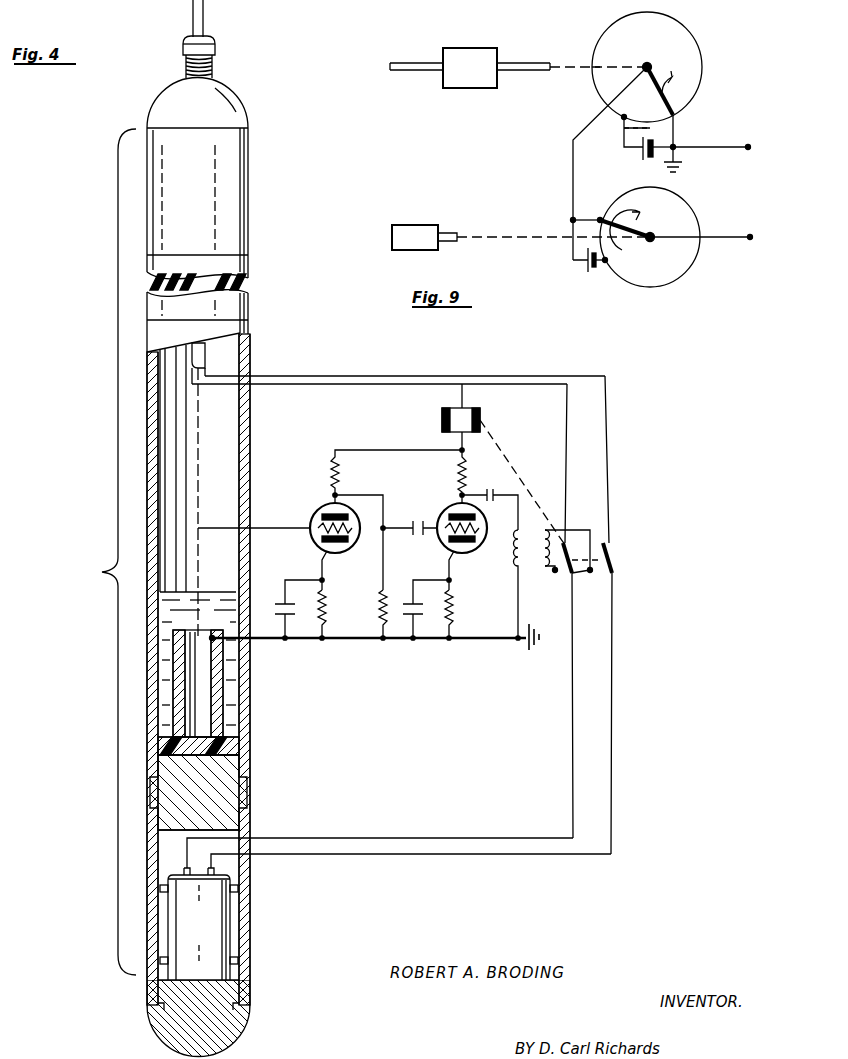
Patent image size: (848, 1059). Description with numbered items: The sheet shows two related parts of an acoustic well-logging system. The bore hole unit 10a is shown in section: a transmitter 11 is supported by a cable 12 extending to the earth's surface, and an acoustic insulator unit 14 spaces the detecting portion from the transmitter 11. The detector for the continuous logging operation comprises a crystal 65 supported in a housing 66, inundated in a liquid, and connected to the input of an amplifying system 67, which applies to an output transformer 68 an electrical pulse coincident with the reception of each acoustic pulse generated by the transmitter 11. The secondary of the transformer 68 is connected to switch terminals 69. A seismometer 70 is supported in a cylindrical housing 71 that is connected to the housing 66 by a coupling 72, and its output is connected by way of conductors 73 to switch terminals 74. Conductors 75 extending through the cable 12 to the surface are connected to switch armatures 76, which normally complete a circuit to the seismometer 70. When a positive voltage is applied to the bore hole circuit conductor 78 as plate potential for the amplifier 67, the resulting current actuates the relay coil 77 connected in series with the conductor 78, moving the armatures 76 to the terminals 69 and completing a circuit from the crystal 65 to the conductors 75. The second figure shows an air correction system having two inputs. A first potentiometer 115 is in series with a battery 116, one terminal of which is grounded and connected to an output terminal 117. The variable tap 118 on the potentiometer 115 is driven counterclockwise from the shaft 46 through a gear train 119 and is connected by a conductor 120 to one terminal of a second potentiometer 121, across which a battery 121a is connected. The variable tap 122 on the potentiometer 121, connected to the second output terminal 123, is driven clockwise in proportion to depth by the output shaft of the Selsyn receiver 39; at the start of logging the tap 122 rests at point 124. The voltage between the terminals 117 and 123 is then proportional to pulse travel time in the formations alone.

In FIG. 4, the bore hole unit 10a is at (97, 552).
In FIG. 4, the transmitter 11 is at (200, 198).
In FIG. 4, the cable 12 is at (206, 26).
In FIG. 4, the acoustic insulator unit 14 is at (249, 262).
In FIG. 4, the crystal 65 is at (205, 680).
In FIG. 4, the housing 66 is at (250, 713).
In FIG. 4, the amplifying system 67 is at (507, 648).
In FIG. 4, the output transformer 68 is at (513, 555).
In FIG. 4, the switch terminals 69 is at (556, 574).
In FIG. 4, the seismometer 70 is at (210, 935).
In FIG. 4, the cylindrical housing 71 is at (250, 914).
In FIG. 4, the coupling 72 is at (208, 803).
In FIG. 4, the conductors 73 is at (468, 853).
In FIG. 4, the switch terminals 74 is at (612, 576).
In FIG. 4, the conductors 75 is at (607, 412).
In FIG. 4, the switch armatures 76 is at (606, 543).
In FIG. 4, the relay coil 77 is at (440, 418).
In FIG. 4, the bore hole circuit conductor 78 is at (347, 385).
In FIG. 9, the Selsyn receiver 39 is at (424, 225).
In FIG. 9, the shaft 46 is at (406, 70).
In FIG. 9, the first potentiometer 115 is at (700, 58).
In FIG. 9, the battery 116 is at (653, 143).
In FIG. 9, the output terminal 117 is at (749, 148).
In FIG. 9, the variable tap 118 is at (657, 102).
In FIG. 9, the gear train 119 is at (460, 48).
In FIG. 9, the conductor 120 is at (573, 178).
In FIG. 9, the second potentiometer 121 is at (652, 286).
In FIG. 9, the battery 121a is at (588, 272).
In FIG. 9, the variable tap 122 is at (642, 240).
In FIG. 9, the second output terminal 123 is at (751, 240).
In FIG. 9, the point 124 is at (601, 218).